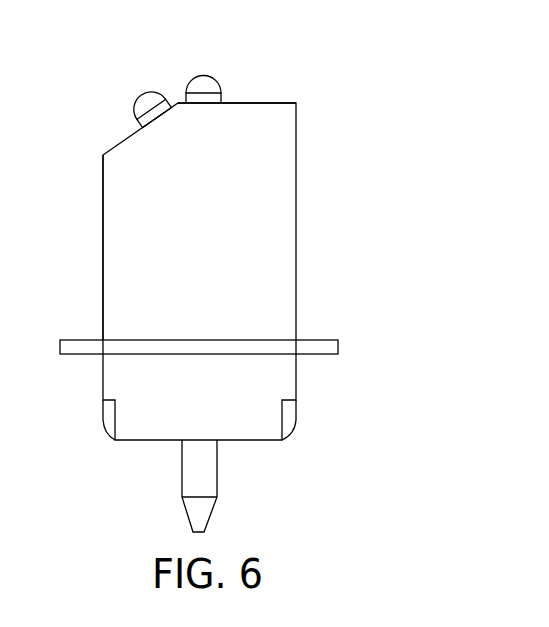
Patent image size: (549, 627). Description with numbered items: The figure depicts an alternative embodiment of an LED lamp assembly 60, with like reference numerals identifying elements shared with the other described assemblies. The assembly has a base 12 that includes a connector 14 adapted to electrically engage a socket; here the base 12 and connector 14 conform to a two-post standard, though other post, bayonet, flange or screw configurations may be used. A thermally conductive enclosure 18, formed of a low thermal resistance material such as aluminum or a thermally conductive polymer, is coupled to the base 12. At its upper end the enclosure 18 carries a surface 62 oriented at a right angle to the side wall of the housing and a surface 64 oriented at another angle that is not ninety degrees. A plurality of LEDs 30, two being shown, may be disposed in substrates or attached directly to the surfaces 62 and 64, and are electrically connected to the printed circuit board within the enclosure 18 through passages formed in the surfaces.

The LED lamp assembly 60 is at (378, 123).
The surface 62 is at (272, 103).
The surface 64 is at (103, 265).
The thermally conductive enclosure 18 is at (296, 273).
The LEDs 30 is at (137, 110).
The base 12 is at (282, 440).
The connector 14 is at (160, 478).